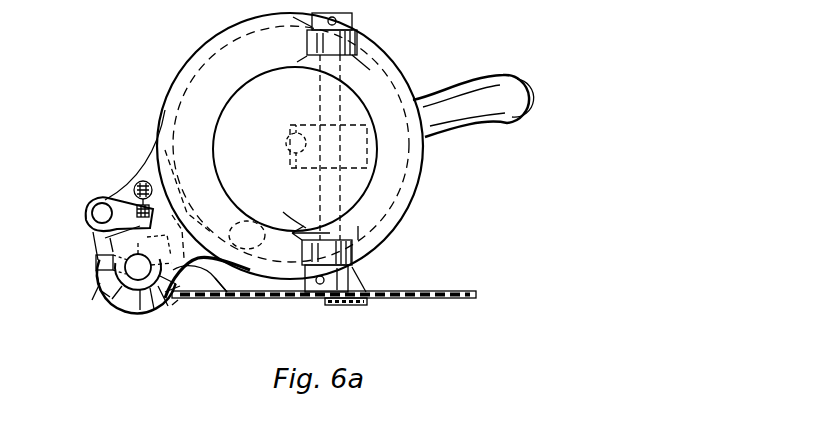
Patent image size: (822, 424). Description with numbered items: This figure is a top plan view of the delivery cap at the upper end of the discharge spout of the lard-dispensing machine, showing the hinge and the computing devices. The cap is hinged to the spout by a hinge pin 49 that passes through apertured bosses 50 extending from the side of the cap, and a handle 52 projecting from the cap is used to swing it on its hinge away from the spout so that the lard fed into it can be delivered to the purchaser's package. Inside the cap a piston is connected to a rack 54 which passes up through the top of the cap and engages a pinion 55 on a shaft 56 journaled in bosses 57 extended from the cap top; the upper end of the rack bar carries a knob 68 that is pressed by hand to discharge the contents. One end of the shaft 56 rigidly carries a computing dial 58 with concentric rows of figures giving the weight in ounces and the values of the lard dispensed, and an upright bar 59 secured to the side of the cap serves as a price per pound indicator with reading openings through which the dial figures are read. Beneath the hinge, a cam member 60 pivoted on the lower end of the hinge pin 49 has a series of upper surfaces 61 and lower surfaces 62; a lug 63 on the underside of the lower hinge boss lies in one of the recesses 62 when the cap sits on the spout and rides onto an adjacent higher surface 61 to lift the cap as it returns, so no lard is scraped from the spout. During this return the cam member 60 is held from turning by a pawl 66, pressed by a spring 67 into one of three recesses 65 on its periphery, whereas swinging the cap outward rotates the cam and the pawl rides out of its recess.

The hinge pin 49 is at (226, 297).
The apertured bosses 50 is at (105, 283).
The handle 52 is at (473, 108).
The rack 54 is at (284, 141).
The pinion 55 is at (292, 166).
The shaft 56 is at (288, 205).
The bosses 57 is at (328, 43).
The computing dial 58 is at (443, 280).
The price per pound indicator 59 is at (343, 306).
The cam member 60 is at (97, 263).
The upper surfaces 61 is at (125, 298).
The lower surfaces 62 is at (145, 305).
The lug 63 is at (178, 263).
The recesses 65 is at (100, 278).
The pawl 66 is at (112, 202).
The spring 67 is at (145, 218).
The knob 68 is at (264, 155).